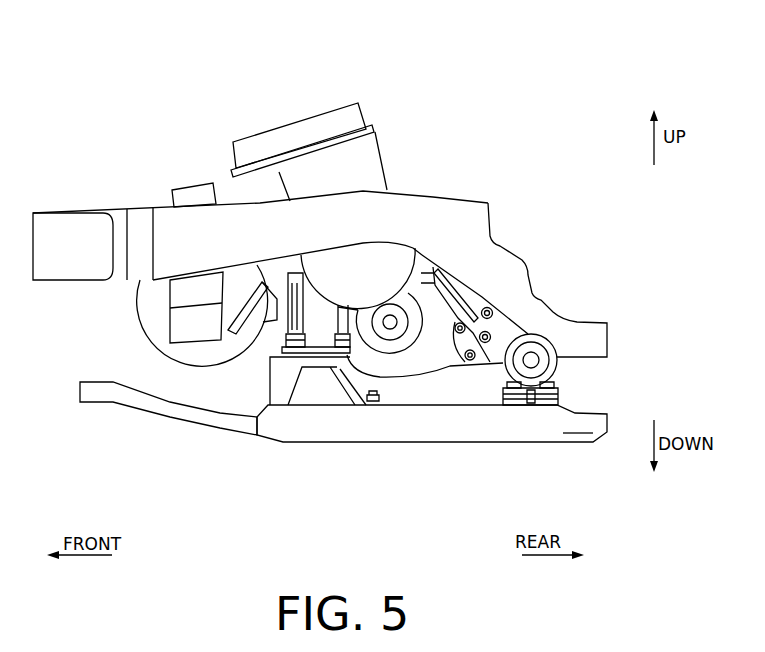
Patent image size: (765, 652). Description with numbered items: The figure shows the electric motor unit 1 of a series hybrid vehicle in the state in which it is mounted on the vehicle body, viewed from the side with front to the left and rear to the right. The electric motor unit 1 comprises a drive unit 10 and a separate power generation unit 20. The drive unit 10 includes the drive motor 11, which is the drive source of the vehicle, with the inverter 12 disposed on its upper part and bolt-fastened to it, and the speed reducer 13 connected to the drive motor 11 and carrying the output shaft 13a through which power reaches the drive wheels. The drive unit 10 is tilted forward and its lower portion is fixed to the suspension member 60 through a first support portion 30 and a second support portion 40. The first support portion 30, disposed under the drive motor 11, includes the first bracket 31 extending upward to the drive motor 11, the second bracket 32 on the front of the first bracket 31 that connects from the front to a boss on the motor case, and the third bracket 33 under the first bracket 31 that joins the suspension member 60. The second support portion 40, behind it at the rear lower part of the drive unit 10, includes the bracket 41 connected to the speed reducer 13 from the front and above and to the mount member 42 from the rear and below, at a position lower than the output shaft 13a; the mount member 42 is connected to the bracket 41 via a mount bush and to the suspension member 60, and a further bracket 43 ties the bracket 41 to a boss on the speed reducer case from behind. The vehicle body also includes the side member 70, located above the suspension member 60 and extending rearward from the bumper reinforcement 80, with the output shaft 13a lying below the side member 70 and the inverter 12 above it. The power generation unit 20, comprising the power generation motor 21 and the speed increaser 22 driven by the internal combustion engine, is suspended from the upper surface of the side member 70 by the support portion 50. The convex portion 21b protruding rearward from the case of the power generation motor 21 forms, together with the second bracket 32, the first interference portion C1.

The electric motor unit 1 is at (191, 55).
The drive unit 10 is at (415, 116).
The drive motor 11 is at (383, 170).
The inverter 12 is at (303, 119).
The speed reducer 13 is at (420, 357).
The output shaft 13a is at (398, 327).
The power generation unit 20 is at (183, 117).
The power generation motor 21 is at (152, 298).
The convex portion 21b is at (267, 313).
The speed increaser 22 is at (177, 357).
The first support portion 30 is at (316, 392).
The first bracket 31 is at (297, 385).
The second bracket 32 is at (287, 325).
The third bracket 33 is at (357, 400).
The second support portion 40 is at (582, 387).
The bracket 41 is at (503, 345).
The mount member 42 is at (563, 367).
The bracket 43 is at (471, 300).
The support portion 50 is at (192, 198).
The suspension member 60 is at (428, 445).
The side member 70 is at (437, 222).
The bumper reinforcement 80 is at (67, 250).
The first interference portion C1 is at (222, 458).